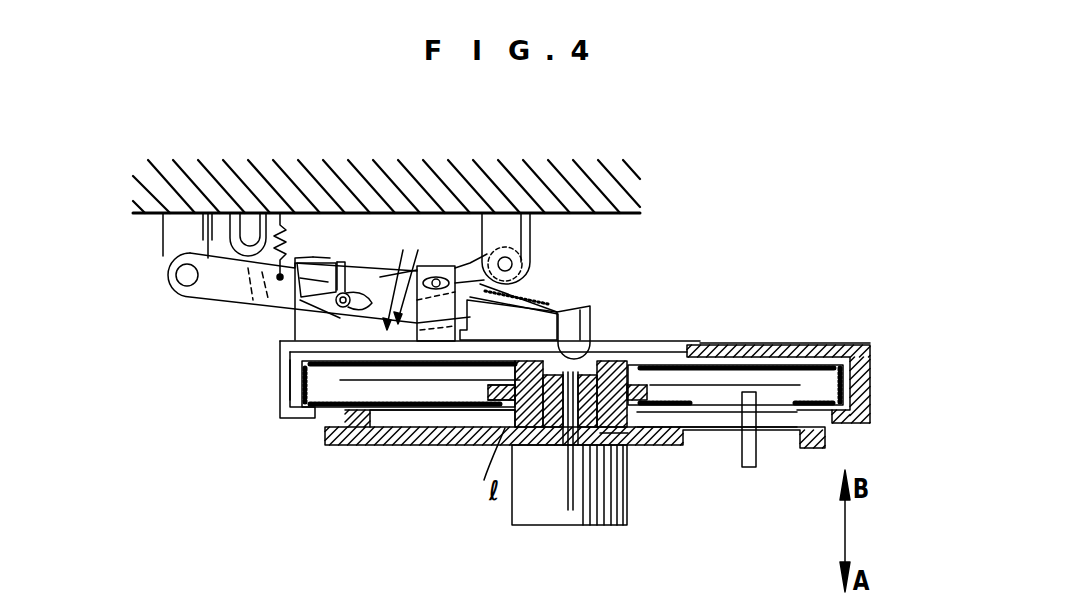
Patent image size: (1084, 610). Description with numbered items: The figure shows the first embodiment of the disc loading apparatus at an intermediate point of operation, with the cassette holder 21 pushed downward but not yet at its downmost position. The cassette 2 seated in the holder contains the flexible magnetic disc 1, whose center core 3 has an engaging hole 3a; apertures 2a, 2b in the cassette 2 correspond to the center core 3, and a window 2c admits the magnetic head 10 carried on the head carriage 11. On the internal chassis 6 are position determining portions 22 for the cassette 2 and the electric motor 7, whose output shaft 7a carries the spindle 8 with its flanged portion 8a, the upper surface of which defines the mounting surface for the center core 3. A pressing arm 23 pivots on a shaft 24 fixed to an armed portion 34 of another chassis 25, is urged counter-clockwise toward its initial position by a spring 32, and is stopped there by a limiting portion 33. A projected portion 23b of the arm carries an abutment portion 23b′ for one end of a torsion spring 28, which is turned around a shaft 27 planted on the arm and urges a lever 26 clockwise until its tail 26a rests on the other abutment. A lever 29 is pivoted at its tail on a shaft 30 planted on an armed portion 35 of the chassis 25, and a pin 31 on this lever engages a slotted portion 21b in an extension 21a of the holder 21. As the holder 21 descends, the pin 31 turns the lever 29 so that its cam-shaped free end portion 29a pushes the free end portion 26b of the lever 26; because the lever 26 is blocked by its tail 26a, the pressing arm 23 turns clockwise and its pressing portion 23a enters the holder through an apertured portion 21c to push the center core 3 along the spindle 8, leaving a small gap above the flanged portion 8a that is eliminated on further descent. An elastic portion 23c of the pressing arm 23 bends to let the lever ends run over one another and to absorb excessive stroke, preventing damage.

The flexible magnetic disc 1 is at (794, 362).
The cassette 2 is at (777, 385).
The aperture 2a is at (636, 362).
The aperture 2b is at (613, 433).
The window 2c is at (798, 411).
The center core 3 is at (617, 362).
The engaging hole 3a is at (604, 366).
The internal chassis 6 is at (358, 447).
The electric motor 7 is at (525, 516).
The output shaft 7a is at (568, 447).
The spindle 8 is at (552, 422).
The flanged portion 8a is at (628, 450).
The magnetic head 10 is at (735, 418).
The head carriage 11 is at (751, 468).
The cassette holder 21 is at (730, 344).
The extension 21a is at (437, 332).
The slotted portion 21b is at (450, 272).
The apertured portion 21c is at (530, 340).
The position determining portion 22 is at (312, 425).
The pressing arm 23 is at (213, 288).
The pressing portion 23a is at (583, 322).
The projected portion 23b is at (314, 268).
The abutment portion 23b′ is at (323, 258).
The elastic portion 23c is at (532, 292).
The shaft 24 is at (177, 283).
The chassis 25 is at (158, 213).
The lever 26 is at (298, 360).
The tail 26a is at (305, 302).
The free end portion 26b is at (292, 350).
The shaft 27 is at (359, 272).
The torsion spring 28 is at (337, 262).
The lever 29 is at (466, 284).
The free end portion 29a is at (385, 300).
The shaft 30 is at (516, 256).
The pin 31 is at (442, 277).
The spring 32 is at (281, 213).
The limiting portion 33 is at (245, 222).
The armed portion 34 is at (168, 236).
The armed portion 35 is at (498, 246).